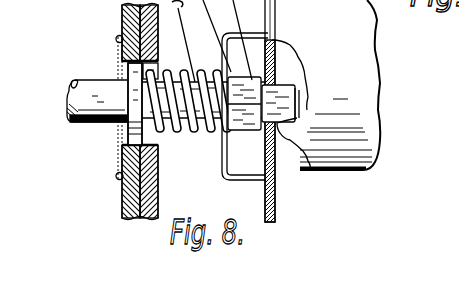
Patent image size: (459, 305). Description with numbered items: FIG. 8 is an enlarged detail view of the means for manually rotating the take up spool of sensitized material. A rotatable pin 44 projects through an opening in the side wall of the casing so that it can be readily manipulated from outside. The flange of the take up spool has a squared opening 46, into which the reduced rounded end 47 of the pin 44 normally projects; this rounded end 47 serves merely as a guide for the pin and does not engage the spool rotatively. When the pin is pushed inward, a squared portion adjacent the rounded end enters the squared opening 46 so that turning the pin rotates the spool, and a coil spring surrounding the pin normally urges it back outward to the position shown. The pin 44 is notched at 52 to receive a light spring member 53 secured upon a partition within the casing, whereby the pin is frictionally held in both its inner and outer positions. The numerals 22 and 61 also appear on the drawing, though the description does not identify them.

The frame member 22 is at (353, 15).
The rotatable pin 44 is at (84, 100).
The squared opening 46 is at (298, 115).
The reduced rounded end 47 is at (283, 98).
The notch 52 is at (78, 86).
The light spring member 53 is at (118, 138).
The washer 61 is at (138, 91).